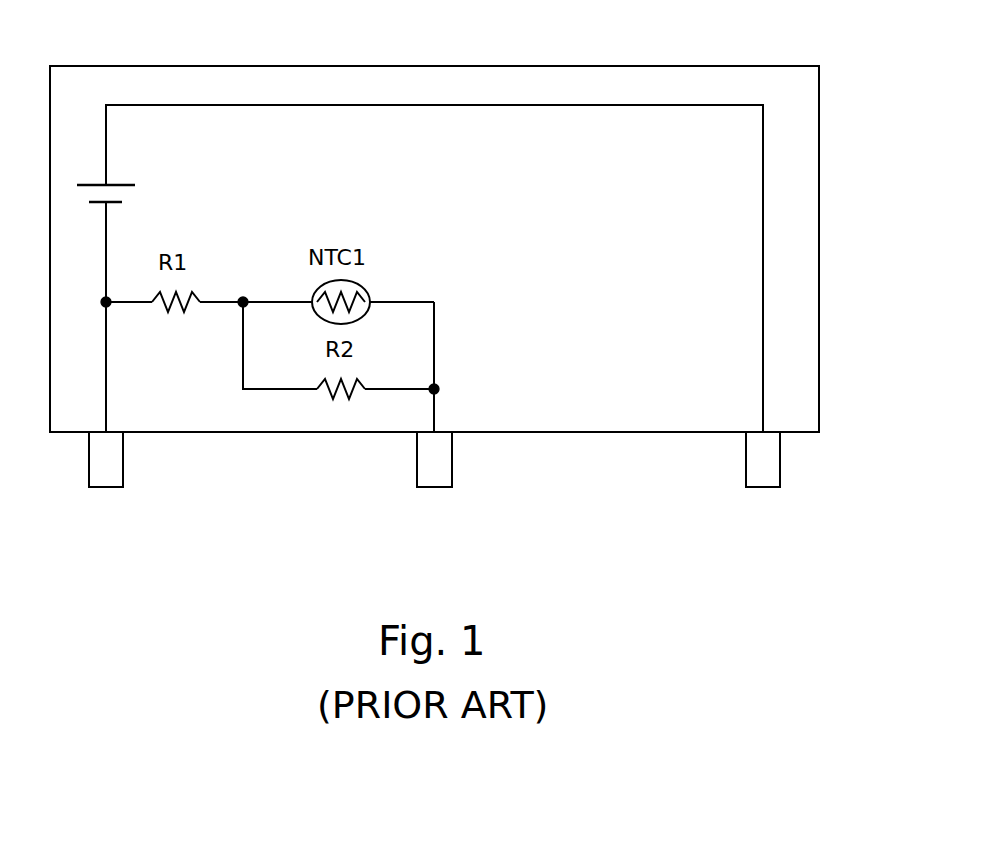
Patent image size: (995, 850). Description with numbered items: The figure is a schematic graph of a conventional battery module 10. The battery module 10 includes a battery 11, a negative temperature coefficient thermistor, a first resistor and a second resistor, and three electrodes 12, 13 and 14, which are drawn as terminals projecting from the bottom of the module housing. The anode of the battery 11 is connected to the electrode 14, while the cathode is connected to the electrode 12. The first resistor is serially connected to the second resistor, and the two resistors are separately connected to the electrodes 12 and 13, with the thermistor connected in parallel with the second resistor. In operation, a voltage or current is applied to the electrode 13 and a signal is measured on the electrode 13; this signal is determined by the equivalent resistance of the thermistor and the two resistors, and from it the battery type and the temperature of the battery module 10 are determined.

The battery module 10 is at (882, 42).
The battery 11 is at (128, 194).
The electrode 12 is at (123, 459).
The electrode 13 is at (452, 459).
The electrode 14 is at (780, 459).